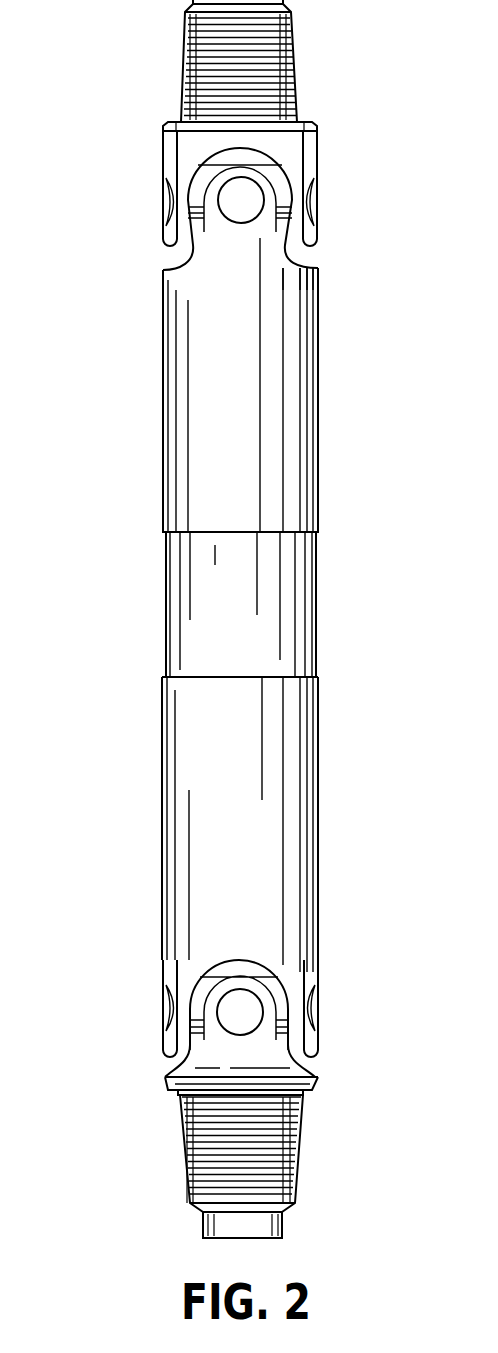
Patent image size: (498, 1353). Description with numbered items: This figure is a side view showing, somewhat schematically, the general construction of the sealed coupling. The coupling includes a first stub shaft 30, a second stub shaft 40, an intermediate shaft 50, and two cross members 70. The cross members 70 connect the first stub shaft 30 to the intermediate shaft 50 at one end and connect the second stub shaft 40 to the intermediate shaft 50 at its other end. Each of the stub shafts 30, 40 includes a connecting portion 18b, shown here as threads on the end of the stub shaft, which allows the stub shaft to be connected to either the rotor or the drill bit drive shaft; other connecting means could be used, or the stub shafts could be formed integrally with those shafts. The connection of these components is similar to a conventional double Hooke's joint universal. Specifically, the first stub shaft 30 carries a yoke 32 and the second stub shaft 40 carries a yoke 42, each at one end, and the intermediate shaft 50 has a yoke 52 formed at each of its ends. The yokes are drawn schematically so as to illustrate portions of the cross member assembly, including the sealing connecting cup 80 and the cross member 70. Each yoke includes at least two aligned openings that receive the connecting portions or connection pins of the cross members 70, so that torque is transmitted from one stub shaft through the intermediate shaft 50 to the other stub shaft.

The connecting portion 18b is at (265, 58).
The first stub shaft 30 is at (318, 122).
The sealing connecting cup 80 is at (170, 203).
The cross member 70 is at (222, 160).
The yoke 32 is at (313, 238).
The yoke 52 is at (250, 242).
The intermediate shaft 50 is at (238, 363).
The yoke 42 is at (240, 1053).
The second stub shaft 40 is at (310, 1118).